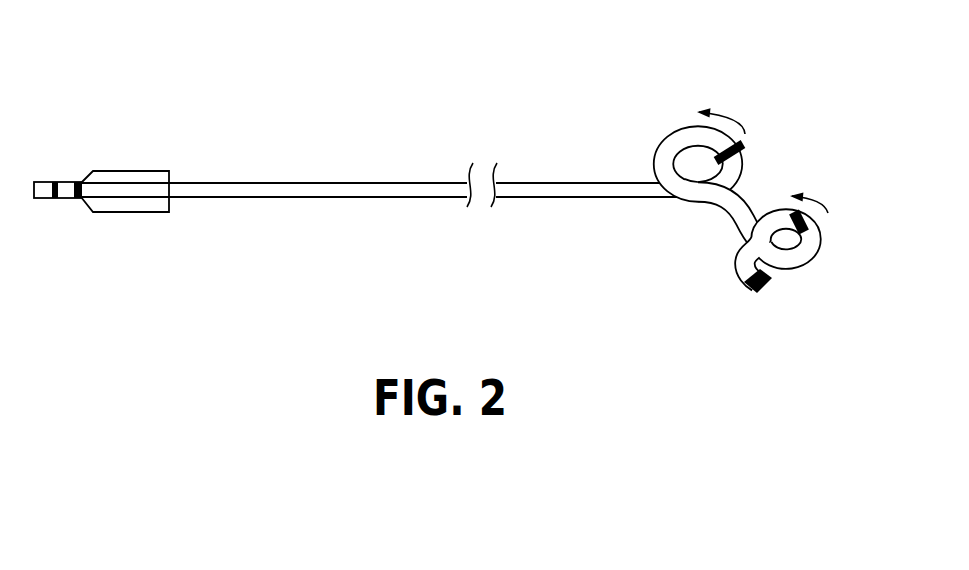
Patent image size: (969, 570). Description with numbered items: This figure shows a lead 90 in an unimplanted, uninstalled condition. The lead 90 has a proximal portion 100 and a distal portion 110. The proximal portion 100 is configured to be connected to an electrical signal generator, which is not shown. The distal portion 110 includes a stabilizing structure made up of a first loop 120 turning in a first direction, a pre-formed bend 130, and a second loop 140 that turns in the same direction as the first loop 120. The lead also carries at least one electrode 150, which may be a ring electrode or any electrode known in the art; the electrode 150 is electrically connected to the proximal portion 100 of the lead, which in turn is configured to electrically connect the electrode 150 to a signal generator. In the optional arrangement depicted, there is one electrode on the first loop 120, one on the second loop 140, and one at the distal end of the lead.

The lead 90 is at (495, 82).
The proximal portion 100 is at (452, 277).
The distal portion 110 is at (681, 203).
The first loop 120 is at (659, 153).
The pre-formed bend 130 is at (733, 209).
The second loop 140 is at (808, 238).
The electrode 150 is at (746, 143).